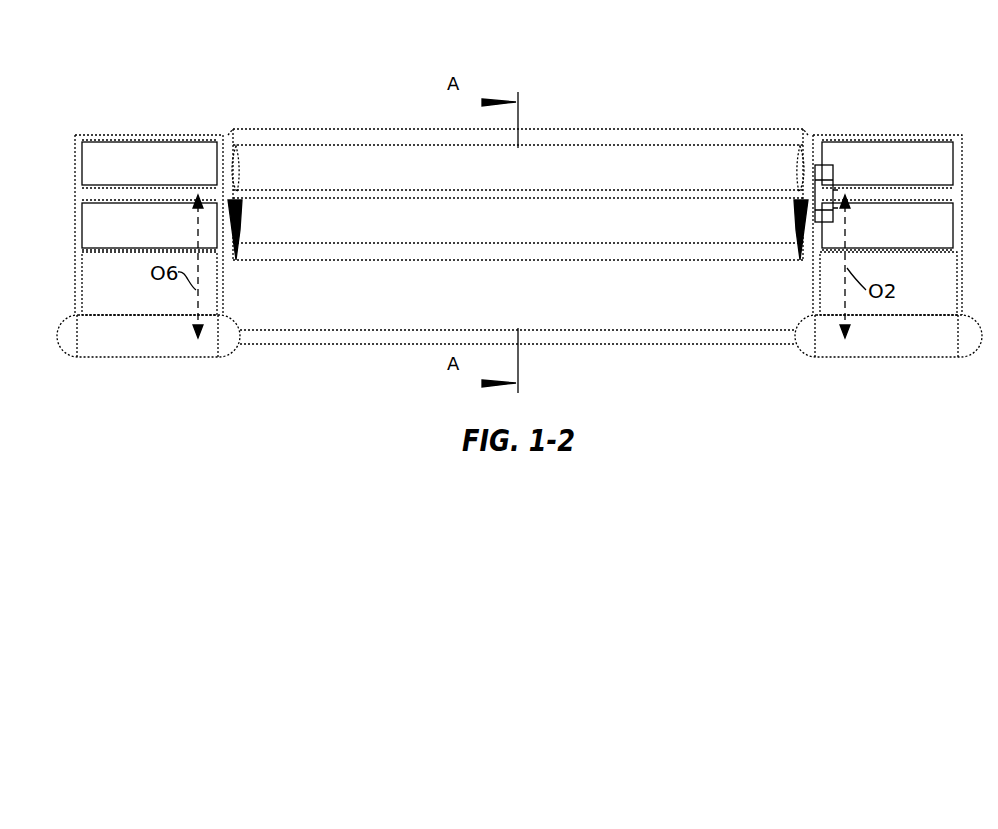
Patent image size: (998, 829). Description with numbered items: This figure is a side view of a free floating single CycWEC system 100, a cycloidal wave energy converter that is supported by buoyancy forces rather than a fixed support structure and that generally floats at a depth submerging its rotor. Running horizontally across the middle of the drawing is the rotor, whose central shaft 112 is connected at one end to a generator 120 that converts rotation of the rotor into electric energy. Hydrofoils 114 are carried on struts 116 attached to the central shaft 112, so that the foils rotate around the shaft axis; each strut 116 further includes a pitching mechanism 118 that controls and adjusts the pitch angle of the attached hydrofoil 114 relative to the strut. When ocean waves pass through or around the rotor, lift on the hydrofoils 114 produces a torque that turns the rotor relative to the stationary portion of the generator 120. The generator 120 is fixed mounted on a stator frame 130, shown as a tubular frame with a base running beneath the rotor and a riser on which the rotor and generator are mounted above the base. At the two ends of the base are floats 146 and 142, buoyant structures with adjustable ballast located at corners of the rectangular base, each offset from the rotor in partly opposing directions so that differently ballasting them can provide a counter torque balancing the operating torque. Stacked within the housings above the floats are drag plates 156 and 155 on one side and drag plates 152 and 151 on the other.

The CycWEC system 100 is at (893, 72).
The central shaft 112 is at (555, 191).
The hydrofoils 114 is at (650, 133).
The struts 116 is at (241, 178).
The pitching mechanism 118 is at (240, 216).
The generator 120 is at (818, 165).
The stator frame 130 is at (592, 337).
The float 142 is at (853, 348).
The float 146 is at (105, 348).
The drag plate 151 is at (887, 225).
The drag plate 152 is at (887, 163).
The drag plate 155 is at (149, 225).
The drag plate 156 is at (149, 163).